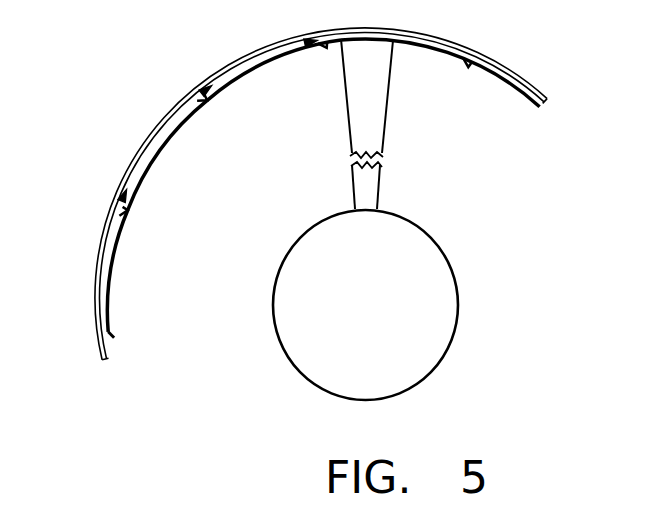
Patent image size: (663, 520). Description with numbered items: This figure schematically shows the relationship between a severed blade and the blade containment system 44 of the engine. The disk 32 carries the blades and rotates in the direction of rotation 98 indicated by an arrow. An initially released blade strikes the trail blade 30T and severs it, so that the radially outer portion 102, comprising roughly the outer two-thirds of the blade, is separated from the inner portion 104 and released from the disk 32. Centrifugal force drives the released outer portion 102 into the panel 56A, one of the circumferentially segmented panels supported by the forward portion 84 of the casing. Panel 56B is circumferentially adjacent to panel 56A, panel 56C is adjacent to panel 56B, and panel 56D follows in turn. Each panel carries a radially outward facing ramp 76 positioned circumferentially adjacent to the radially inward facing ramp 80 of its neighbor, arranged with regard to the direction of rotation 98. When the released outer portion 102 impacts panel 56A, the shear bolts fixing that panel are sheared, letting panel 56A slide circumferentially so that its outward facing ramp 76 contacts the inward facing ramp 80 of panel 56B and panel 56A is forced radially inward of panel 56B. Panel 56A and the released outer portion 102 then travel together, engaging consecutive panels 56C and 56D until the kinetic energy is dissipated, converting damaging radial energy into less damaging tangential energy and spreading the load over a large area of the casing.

The blade containment system 44 is at (498, 54).
The forward portion of casing 84 is at (168, 110).
The radially outward facing ramp 76 is at (202, 92).
The radially inward facing ramp 80 is at (207, 100).
The panel 56A is at (403, 48).
The panel 56B is at (253, 68).
The panel 56C is at (162, 150).
The panel 56D is at (113, 283).
The radially outer portion of trail blade 102 is at (368, 132).
The inner portion of trail blade 104 is at (370, 187).
The trail blade 30T is at (397, 173).
The direction of rotation 98 is at (420, 107).
The disk 32 is at (442, 316).